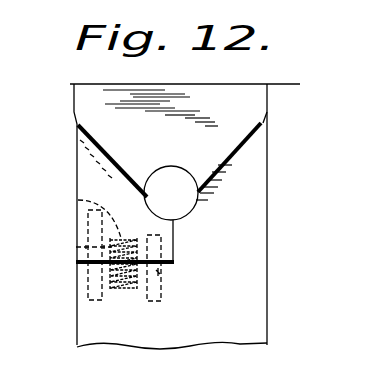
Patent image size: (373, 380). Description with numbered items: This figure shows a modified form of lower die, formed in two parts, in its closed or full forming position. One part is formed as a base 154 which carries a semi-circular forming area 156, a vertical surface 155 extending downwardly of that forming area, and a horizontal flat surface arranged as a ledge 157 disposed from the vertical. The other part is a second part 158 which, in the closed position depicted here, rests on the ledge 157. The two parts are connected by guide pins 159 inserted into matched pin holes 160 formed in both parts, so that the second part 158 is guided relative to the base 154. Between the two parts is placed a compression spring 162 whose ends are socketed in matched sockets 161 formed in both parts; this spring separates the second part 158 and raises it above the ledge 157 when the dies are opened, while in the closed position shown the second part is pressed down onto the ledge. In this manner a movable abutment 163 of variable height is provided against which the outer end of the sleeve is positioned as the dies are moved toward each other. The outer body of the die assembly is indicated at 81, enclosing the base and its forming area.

The hopper 81 is at (267, 103).
The base 154 is at (252, 140).
The semi-circular forming area 156 is at (228, 163).
The second part 158 is at (82, 175).
The movable abutment 163 is at (182, 217).
The vertical surface 155 is at (173, 243).
The ledge 157 is at (77, 264).
The guide pins 159 is at (158, 272).
The pin holes 160 is at (162, 299).
The sockets 161 is at (80, 200).
The compression spring 162 is at (78, 247).